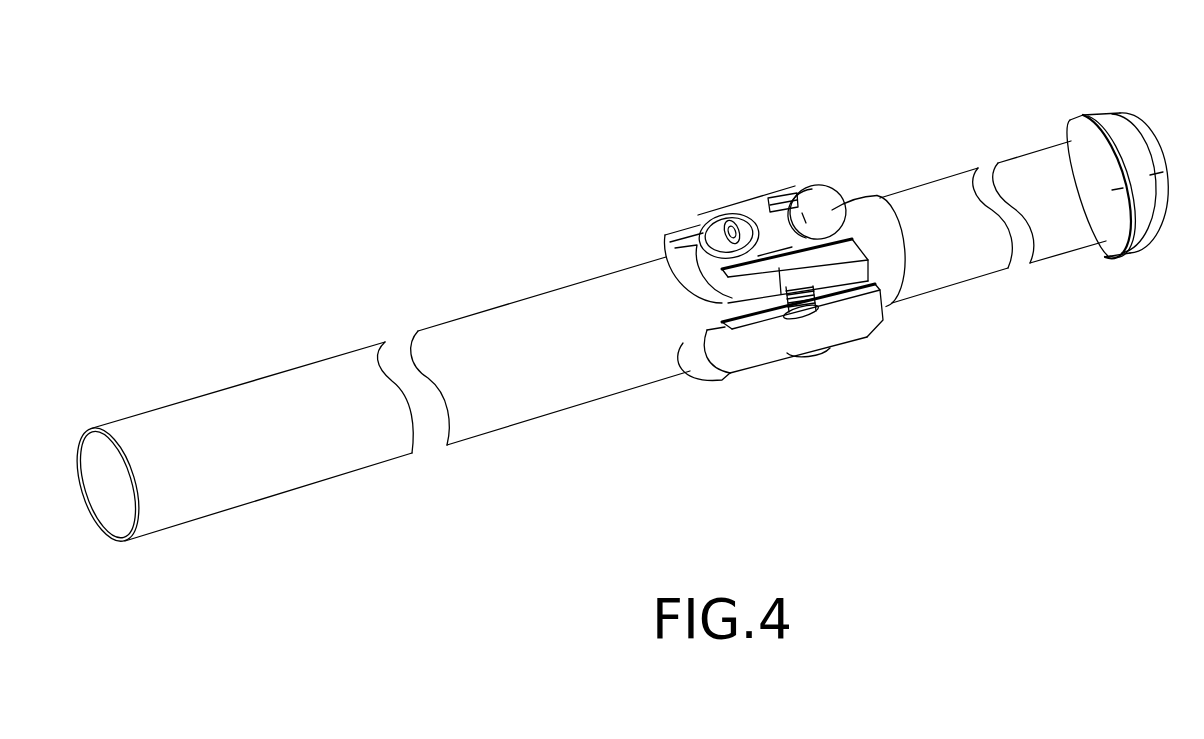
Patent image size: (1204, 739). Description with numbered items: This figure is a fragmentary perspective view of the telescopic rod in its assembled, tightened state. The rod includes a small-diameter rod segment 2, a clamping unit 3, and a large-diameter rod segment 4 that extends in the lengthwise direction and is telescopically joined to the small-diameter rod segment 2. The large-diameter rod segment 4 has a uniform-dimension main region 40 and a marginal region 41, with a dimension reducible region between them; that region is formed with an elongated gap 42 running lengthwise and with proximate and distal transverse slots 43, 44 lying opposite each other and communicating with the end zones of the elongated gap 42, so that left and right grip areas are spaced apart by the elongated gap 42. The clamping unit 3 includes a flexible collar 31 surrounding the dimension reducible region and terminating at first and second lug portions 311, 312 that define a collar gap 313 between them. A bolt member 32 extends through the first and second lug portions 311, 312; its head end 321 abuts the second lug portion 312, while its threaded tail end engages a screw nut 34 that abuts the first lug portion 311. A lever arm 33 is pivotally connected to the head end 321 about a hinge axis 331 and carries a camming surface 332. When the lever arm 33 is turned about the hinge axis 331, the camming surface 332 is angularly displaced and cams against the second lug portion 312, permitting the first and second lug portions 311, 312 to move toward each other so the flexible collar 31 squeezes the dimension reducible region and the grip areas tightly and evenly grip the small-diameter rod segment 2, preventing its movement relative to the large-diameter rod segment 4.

The small-diameter rod segment 2 is at (947, 150).
The clamping unit 3 is at (740, 165).
The large-diameter rod segment 4 is at (493, 256).
The flexible collar 31 is at (672, 233).
The first lug portion 311 is at (860, 340).
The second lug portion 312 is at (810, 193).
The collar gap 313 is at (683, 330).
The bolt member 32 is at (817, 330).
The head end 321 is at (787, 217).
The lever arm 33 is at (733, 200).
The hinge axis 331 is at (715, 220).
The camming surface 332 is at (815, 187).
The screw nut 34 is at (840, 353).
The uniform-dimension main region 40 is at (572, 378).
The marginal region 41 is at (892, 273).
The elongated gap 42 is at (748, 330).
The proximate transverse slot 43 is at (880, 232).
The distal transverse slot 44 is at (700, 283).